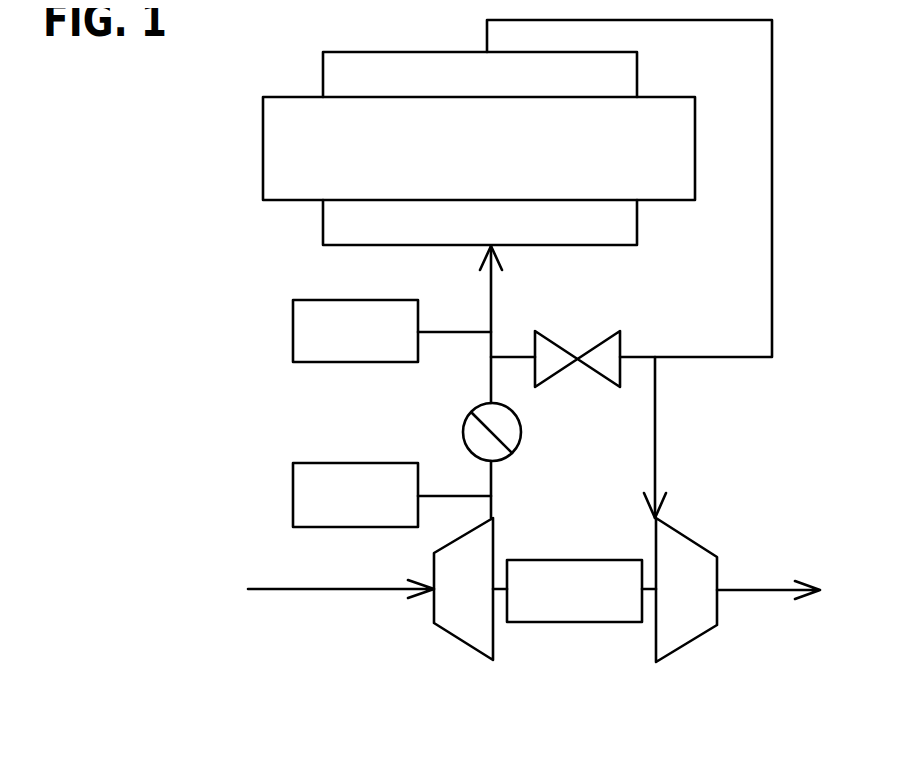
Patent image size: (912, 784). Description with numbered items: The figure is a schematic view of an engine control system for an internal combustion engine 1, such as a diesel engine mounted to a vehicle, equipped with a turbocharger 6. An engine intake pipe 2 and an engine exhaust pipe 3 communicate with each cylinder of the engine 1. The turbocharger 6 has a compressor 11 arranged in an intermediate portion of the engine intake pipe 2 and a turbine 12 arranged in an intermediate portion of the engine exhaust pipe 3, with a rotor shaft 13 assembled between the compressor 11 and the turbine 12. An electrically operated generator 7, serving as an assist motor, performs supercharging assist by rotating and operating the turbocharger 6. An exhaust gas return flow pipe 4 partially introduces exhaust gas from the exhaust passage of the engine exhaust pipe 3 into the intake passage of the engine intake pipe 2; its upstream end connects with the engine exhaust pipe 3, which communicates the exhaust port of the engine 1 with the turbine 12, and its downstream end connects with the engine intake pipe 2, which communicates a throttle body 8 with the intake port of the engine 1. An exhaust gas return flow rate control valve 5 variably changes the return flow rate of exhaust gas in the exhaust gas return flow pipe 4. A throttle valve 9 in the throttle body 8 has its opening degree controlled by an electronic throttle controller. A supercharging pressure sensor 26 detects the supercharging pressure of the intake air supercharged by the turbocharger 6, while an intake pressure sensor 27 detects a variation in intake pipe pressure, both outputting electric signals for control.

The internal combustion engine 1 is at (290, 97).
The engine intake pipe 2 is at (491, 378).
The engine exhaust pipe 3 is at (657, 392).
The exhaust gas return flow pipe 4 is at (637, 357).
The exhaust gas return flow rate control valve 5 is at (592, 375).
The turbocharger 6 is at (534, 631).
The electrically operated generator 7 is at (572, 622).
The throttle body 8 is at (463, 432).
The throttle valve 9 is at (497, 432).
The compressor 11 is at (432, 617).
The turbine 12 is at (712, 628).
The rotor shaft 13 is at (500, 589).
The supercharging pressure sensor 26 is at (293, 330).
The intake pressure sensor 27 is at (293, 497).